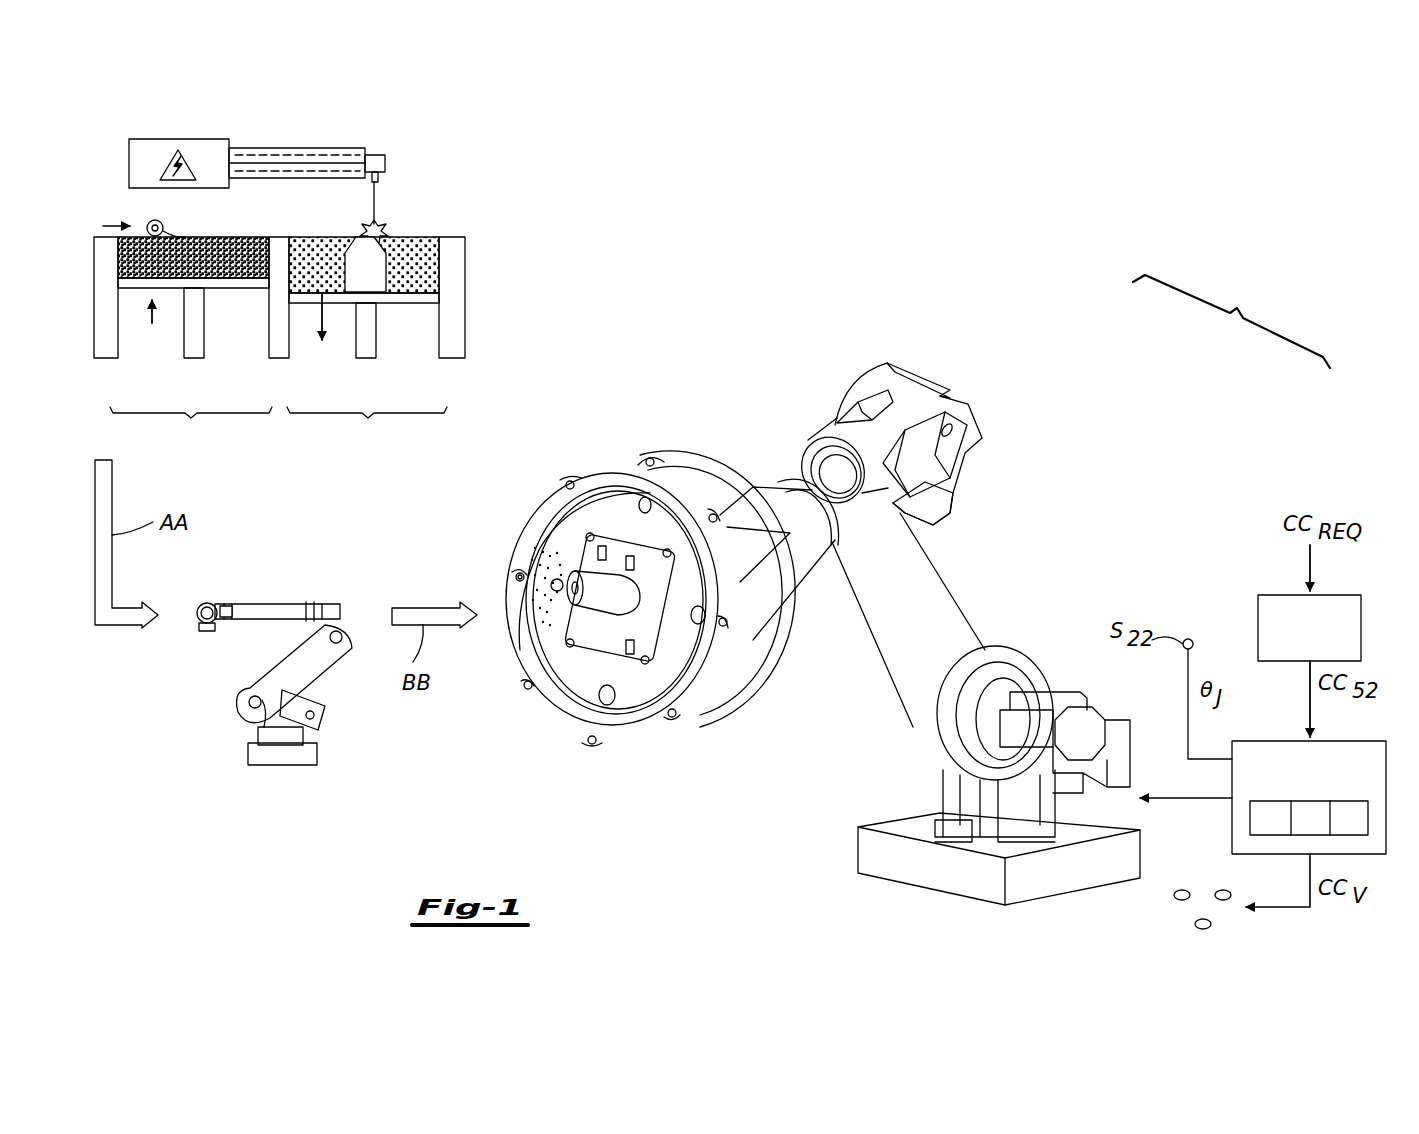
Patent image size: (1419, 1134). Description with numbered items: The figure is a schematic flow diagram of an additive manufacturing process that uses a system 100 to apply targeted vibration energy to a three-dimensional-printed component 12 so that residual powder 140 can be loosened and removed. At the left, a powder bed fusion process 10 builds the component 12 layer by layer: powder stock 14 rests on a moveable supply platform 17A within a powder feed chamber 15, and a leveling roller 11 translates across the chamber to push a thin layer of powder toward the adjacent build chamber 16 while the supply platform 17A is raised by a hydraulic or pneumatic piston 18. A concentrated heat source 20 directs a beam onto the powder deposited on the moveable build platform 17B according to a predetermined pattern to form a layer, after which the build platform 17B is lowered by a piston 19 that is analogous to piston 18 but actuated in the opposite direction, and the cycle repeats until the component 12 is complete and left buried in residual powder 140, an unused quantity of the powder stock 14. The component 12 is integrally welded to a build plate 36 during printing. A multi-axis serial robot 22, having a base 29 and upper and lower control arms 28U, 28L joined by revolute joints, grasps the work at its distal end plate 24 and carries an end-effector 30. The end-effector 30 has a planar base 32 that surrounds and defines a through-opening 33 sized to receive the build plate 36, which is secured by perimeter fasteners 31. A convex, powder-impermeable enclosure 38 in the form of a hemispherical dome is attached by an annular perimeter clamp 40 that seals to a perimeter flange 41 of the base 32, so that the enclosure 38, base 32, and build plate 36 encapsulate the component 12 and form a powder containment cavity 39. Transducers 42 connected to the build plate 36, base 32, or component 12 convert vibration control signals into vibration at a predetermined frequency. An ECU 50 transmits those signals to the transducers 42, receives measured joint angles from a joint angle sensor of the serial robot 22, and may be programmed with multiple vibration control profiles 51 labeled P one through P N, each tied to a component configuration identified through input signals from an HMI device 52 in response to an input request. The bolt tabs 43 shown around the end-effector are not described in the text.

The powder bed fusion process 10 is at (482, 172).
The leveling roller 11 is at (160, 222).
The 3D-printed component 12 is at (380, 286).
The powder stock 14 is at (222, 235).
The powder feed chamber 15 is at (186, 323).
The build chamber 16 is at (376, 346).
The supply platform 17A is at (238, 283).
The build platform 17B is at (408, 298).
The piston 18 is at (191, 360).
The piston 19 is at (362, 360).
The heat source 20 is at (416, 136).
The serial robot 22 is at (205, 738).
The end plate 24 is at (208, 632).
The upper control arm 28U is at (802, 588).
The lower control arm 28L is at (930, 618).
The base 29 is at (955, 872).
The end-effector 30 is at (712, 430).
The perimeter fasteners 31 is at (590, 533).
The base 32 is at (570, 686).
The through-opening 33 is at (655, 545).
The build plate 36 is at (614, 650).
The enclosure 38 is at (515, 560).
The powder containment cavity 39 is at (614, 505).
The perimeter clamp 40 is at (574, 718).
The perimeter flange 41 is at (628, 736).
The transducers 42 is at (598, 552).
The bolt tabs 43 is at (652, 458).
The ECU 50 is at (1352, 741).
The vibration control profiles 51 is at (1250, 822).
The HMI device 52 is at (1361, 630).
The system 100 is at (1231, 321).
The residual powder 140 is at (318, 240).